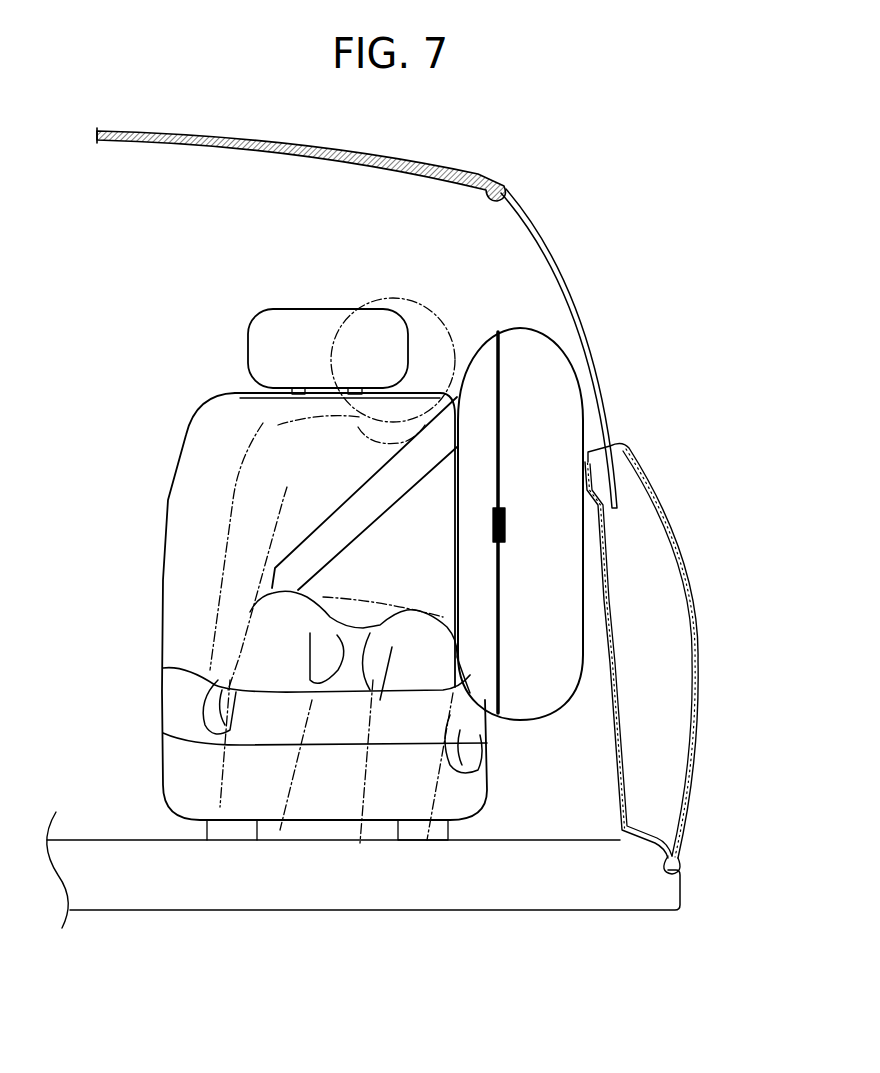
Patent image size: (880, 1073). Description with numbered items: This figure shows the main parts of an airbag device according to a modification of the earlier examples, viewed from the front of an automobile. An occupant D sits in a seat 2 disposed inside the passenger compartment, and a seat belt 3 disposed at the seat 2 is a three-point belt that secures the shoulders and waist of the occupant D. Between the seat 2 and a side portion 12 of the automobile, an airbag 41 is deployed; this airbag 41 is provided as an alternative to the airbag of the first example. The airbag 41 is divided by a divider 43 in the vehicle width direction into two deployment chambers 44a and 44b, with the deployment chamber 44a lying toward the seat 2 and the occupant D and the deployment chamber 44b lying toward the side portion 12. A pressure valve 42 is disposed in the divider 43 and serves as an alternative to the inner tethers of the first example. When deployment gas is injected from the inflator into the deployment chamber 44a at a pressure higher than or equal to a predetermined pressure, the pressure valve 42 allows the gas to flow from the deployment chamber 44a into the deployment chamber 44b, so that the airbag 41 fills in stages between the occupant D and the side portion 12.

The seat 2 is at (230, 392).
The seat belt 3 is at (360, 478).
The side portion 12 is at (604, 382).
The airbag 41 is at (530, 328).
The pressure valve 42 is at (505, 526).
The divider 43 is at (500, 442).
The deployment chamber 44a is at (481, 399).
The deployment chamber 44b is at (525, 665).
The occupant D is at (378, 298).